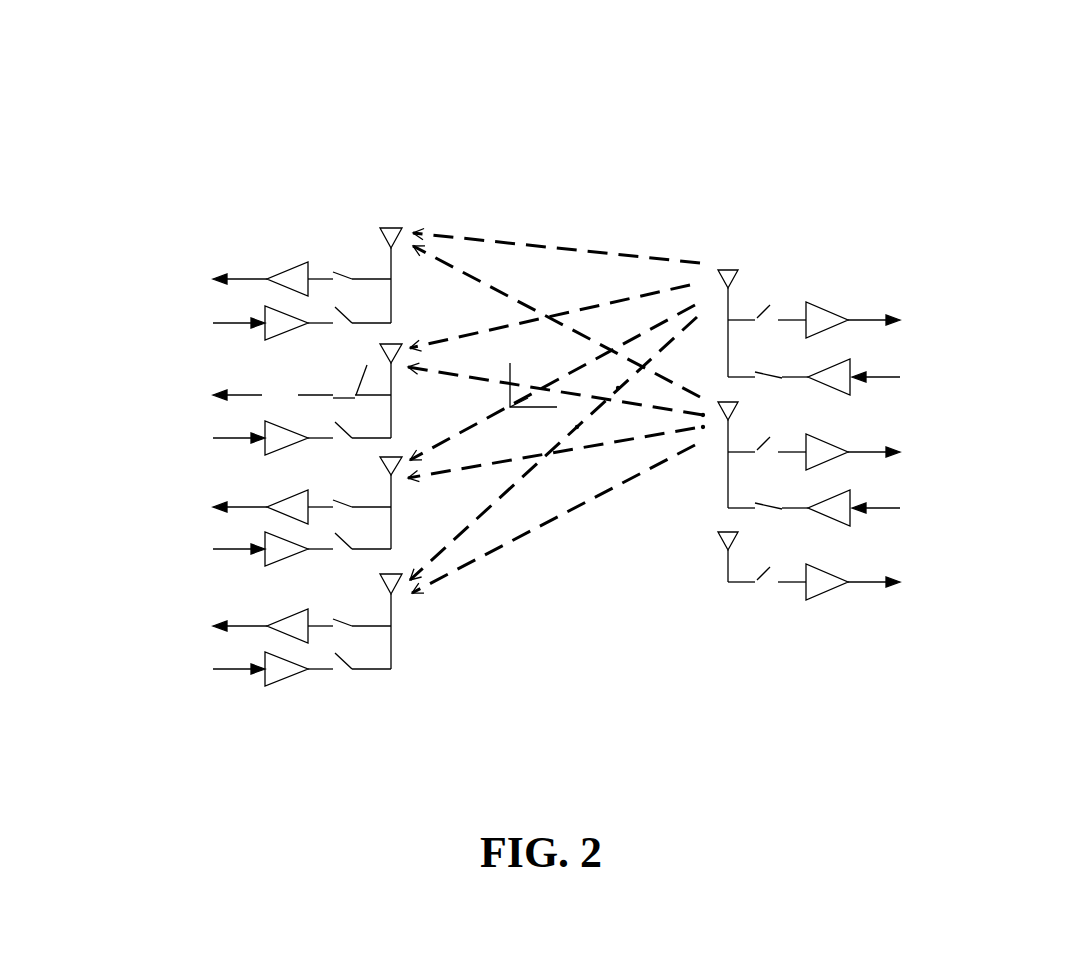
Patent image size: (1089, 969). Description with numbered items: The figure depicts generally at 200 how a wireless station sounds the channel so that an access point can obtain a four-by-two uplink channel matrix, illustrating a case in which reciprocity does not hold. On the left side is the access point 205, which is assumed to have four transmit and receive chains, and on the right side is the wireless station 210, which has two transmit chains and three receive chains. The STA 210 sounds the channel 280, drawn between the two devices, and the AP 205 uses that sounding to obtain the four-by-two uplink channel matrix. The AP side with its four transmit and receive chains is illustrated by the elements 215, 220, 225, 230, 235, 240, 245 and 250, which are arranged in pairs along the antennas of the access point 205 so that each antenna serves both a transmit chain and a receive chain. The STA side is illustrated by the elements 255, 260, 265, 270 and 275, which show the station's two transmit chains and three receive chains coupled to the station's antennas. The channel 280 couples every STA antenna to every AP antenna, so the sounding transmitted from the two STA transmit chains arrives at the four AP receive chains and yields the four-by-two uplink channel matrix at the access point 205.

The channel sounding arrangement 200 is at (618, 73).
The access point 205 is at (280, 212).
The wireless station 210 is at (823, 237).
The AP transmit and receive chain 215 is at (198, 265).
The AP transmit and receive chain 220 is at (180, 315).
The AP transmit and receive chain 225 is at (189, 397).
The AP transmit and receive chain 230 is at (187, 448).
The AP transmit and receive chain 235 is at (202, 513).
The AP transmit and receive chain 240 is at (187, 544).
The AP transmit and receive chain 245 is at (187, 628).
The AP transmit and receive chain 250 is at (187, 667).
The STA transmit and receive chain 255 is at (913, 303).
The STA transmit and receive chain 260 is at (919, 363).
The STA transmit and receive chain 265 is at (919, 437).
The STA transmit and receive chain 270 is at (919, 492).
The STA transmit and receive chain 275 is at (919, 568).
The channel 280 is at (657, 208).